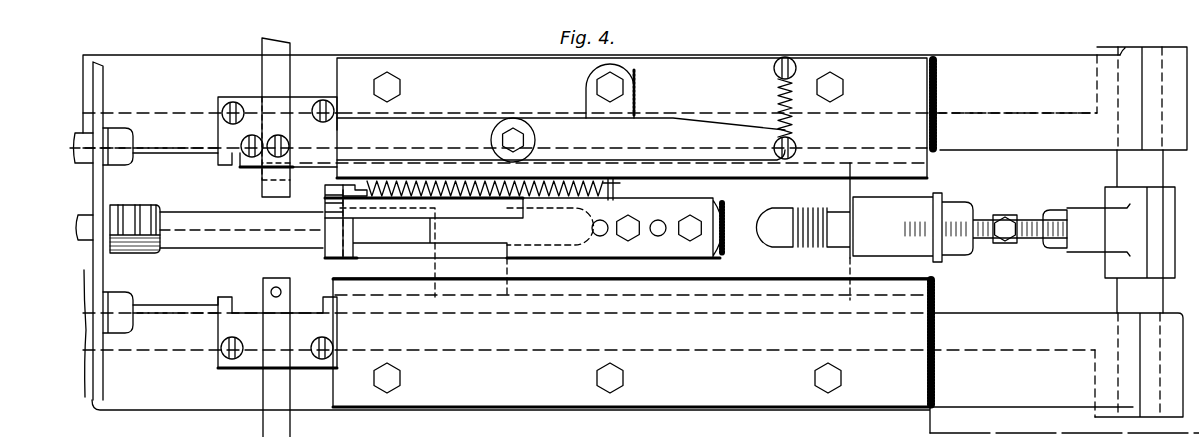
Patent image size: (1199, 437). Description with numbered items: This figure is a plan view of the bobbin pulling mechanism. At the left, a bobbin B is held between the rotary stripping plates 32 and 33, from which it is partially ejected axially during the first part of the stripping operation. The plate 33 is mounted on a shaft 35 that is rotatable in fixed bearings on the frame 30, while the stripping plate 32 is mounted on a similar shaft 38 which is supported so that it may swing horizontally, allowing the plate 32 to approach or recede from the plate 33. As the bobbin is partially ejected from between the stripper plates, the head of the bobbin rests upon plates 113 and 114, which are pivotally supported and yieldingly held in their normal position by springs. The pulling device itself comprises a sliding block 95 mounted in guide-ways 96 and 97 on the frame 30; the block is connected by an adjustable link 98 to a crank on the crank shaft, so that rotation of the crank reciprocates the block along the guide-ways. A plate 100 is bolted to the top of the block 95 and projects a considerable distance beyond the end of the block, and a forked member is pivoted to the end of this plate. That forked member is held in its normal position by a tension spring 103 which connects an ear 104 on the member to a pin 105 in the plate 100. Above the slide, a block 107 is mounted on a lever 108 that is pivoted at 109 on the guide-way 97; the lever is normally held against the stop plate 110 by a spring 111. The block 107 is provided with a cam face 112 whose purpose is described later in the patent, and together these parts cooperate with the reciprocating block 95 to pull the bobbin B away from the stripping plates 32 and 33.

The frame 30 is at (1057, 365).
The rotary stripping plate 32 is at (103, 392).
The rotary stripping plate 33 is at (105, 92).
The shaft 35 is at (120, 168).
The shaft 38 is at (100, 265).
The sliding block 95 is at (802, 231).
The guide-way 96 is at (632, 342).
The guide-way 97 is at (632, 118).
The adjustable link 98 is at (952, 207).
The plate 100 is at (615, 228).
The tension spring 103 is at (466, 195).
The ear 104 is at (326, 193).
The pin 105 is at (614, 191).
The block 107 is at (262, 185).
The lever 108 is at (432, 128).
The pivot 109 is at (516, 138).
The stop plate 110 is at (630, 101).
The spring 111 is at (776, 100).
The cam face 112 is at (234, 186).
The plate 113 is at (241, 247).
The plate 114 is at (190, 214).
The bobbin B is at (138, 248).